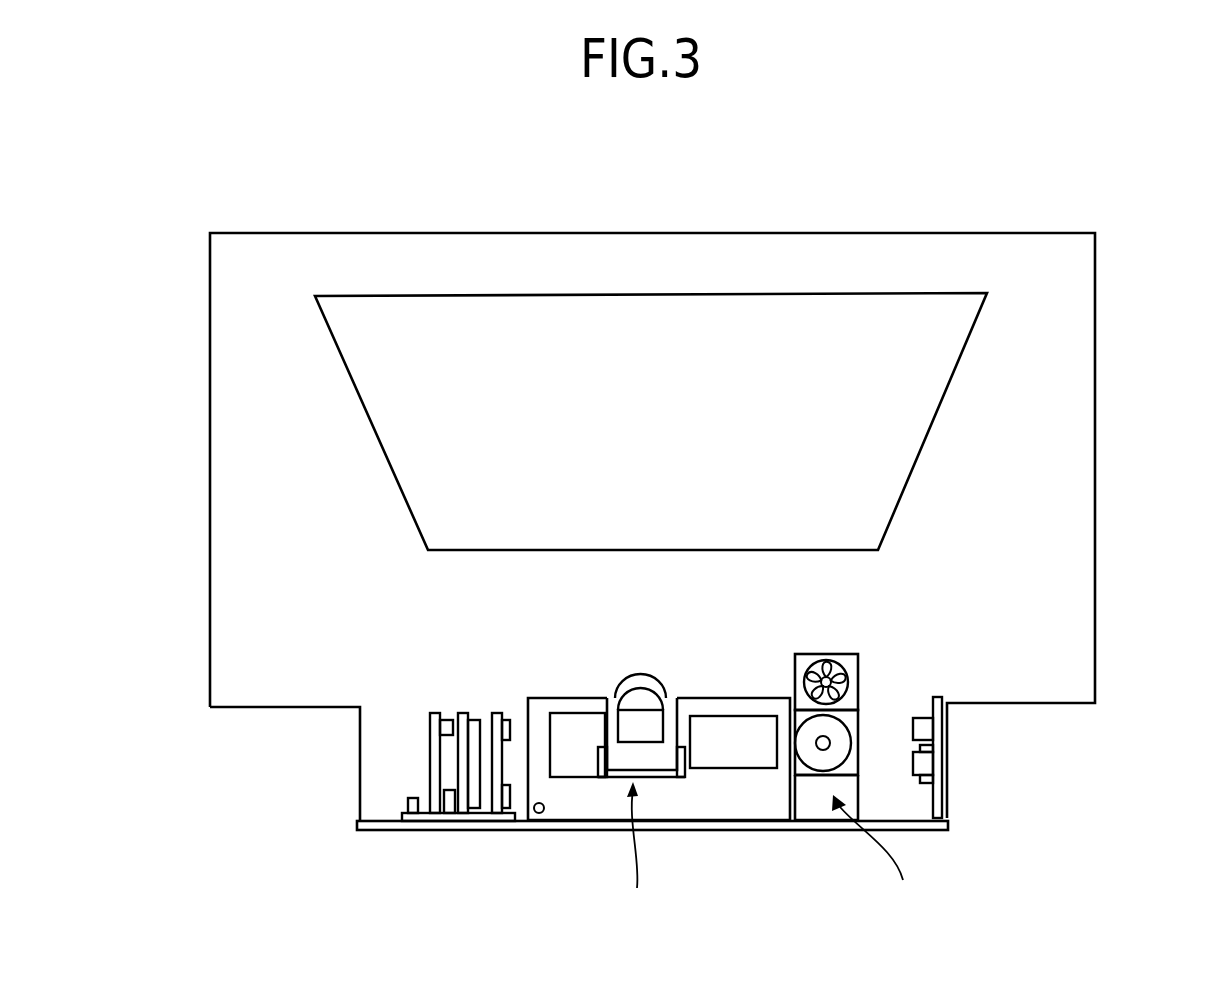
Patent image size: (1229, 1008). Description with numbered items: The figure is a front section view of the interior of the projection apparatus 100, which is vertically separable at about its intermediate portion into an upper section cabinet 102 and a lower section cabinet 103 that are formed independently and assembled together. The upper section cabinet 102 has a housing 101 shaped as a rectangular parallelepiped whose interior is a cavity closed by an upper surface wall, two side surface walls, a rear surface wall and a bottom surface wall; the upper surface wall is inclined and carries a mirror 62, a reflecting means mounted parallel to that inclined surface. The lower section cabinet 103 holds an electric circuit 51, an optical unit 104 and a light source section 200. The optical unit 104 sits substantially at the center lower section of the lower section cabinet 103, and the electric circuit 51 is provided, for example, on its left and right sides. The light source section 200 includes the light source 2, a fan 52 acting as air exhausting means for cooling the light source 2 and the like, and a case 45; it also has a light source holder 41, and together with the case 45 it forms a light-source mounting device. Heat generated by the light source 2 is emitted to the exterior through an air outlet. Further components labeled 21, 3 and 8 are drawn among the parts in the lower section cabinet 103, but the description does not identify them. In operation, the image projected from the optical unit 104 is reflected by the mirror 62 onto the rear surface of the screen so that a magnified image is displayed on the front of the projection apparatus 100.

The projection apparatus 100 is at (645, 205).
The housing 101 is at (1095, 231).
The upper section cabinet 102 is at (1095, 553).
The mirror 62 is at (940, 407).
The fan 52 is at (858, 683).
The lower section cabinet 103 is at (947, 737).
The electric circuit 51 is at (430, 822).
The housing 21 is at (568, 770).
The light source lamp unit 3 is at (593, 770).
The optical unit 104 is at (636, 856).
The power supply unit 8 is at (718, 755).
The light source 2 is at (808, 757).
The light source holder 41 is at (850, 768).
The case 45 is at (823, 803).
The light source section 200 is at (882, 858).